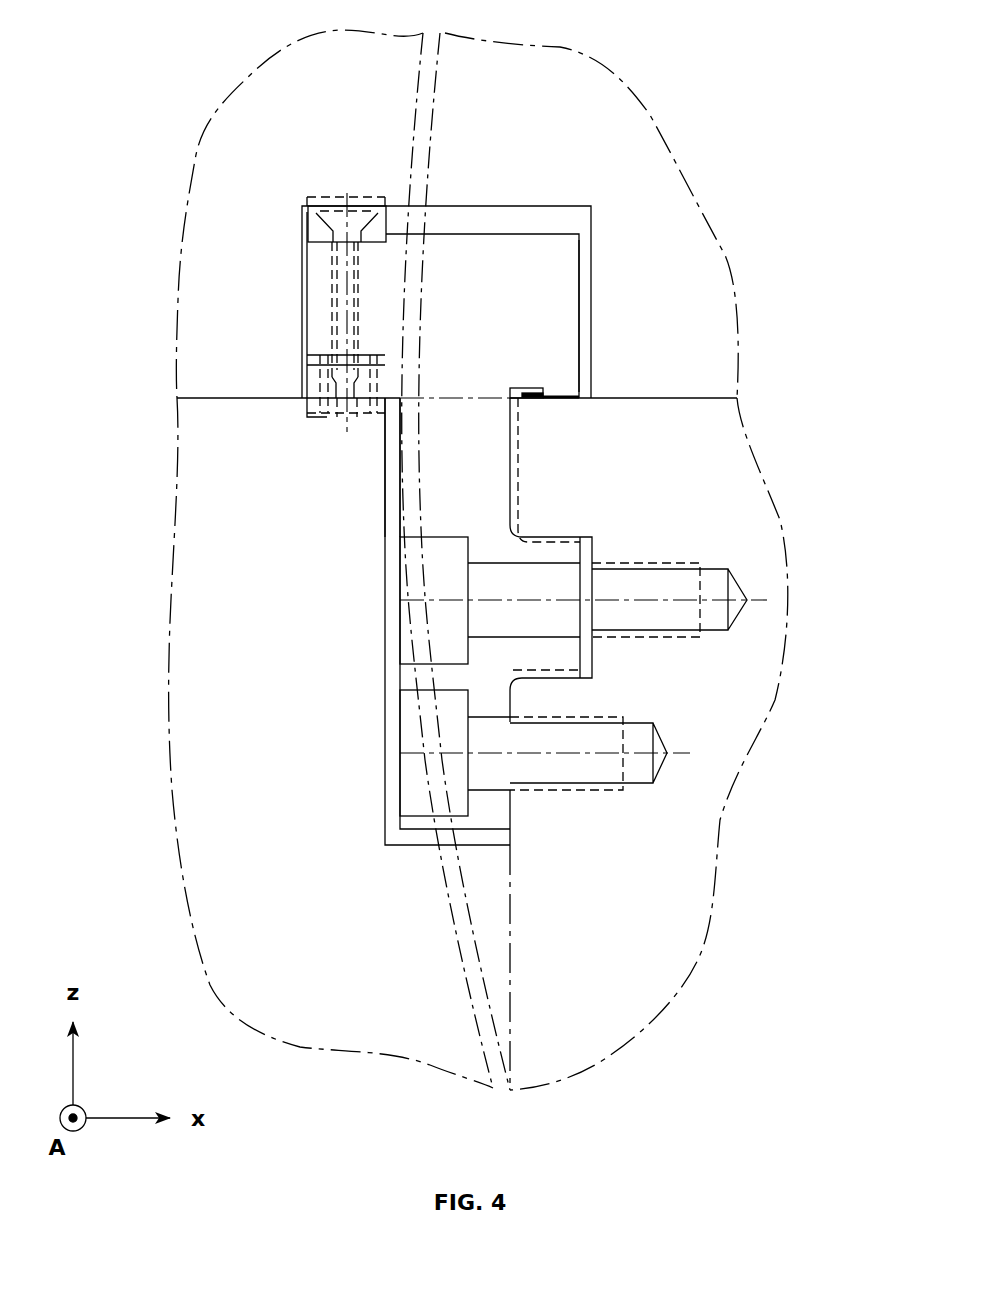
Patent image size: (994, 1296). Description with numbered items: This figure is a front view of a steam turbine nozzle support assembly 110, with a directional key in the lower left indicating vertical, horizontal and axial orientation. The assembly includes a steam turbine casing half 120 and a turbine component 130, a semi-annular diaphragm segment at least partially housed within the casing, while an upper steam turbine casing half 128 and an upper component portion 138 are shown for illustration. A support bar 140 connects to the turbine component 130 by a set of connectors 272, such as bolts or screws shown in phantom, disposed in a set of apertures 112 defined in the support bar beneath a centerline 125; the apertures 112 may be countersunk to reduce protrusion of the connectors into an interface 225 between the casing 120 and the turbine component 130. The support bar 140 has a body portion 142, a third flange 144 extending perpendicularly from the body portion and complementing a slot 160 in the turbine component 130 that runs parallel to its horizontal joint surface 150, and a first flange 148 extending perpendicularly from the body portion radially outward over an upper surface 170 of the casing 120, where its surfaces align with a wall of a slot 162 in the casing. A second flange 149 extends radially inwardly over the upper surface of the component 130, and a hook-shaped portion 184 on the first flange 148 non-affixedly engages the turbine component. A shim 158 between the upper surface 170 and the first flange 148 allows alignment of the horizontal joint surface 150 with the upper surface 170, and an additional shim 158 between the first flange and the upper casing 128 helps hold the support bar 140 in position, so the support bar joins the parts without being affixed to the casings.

The steam turbine nozzle support assembly 110 is at (124, 100).
The set of apertures 112 is at (432, 622).
The steam turbine casing half 120 is at (277, 966).
The centerline 125 is at (265, 391).
The upper steam turbine casing half 128 is at (310, 87).
The turbine component 130 is at (572, 1015).
The upper component portion 138 is at (476, 87).
The support bar 140 is at (414, 621).
The body portion 142 is at (435, 518).
The third flange 144 is at (548, 577).
The first flange 148 is at (418, 286).
The second flange 149 is at (540, 265).
The horizontal joint surface 150 is at (662, 398).
The shim 158 is at (312, 197).
The slot 160 is at (607, 531).
The slot 162 is at (273, 343).
The upper surface 170 is at (243, 399).
The hook-shaped portion 184 is at (511, 390).
The interface 225 is at (438, 932).
The set of connectors 272 is at (668, 618).